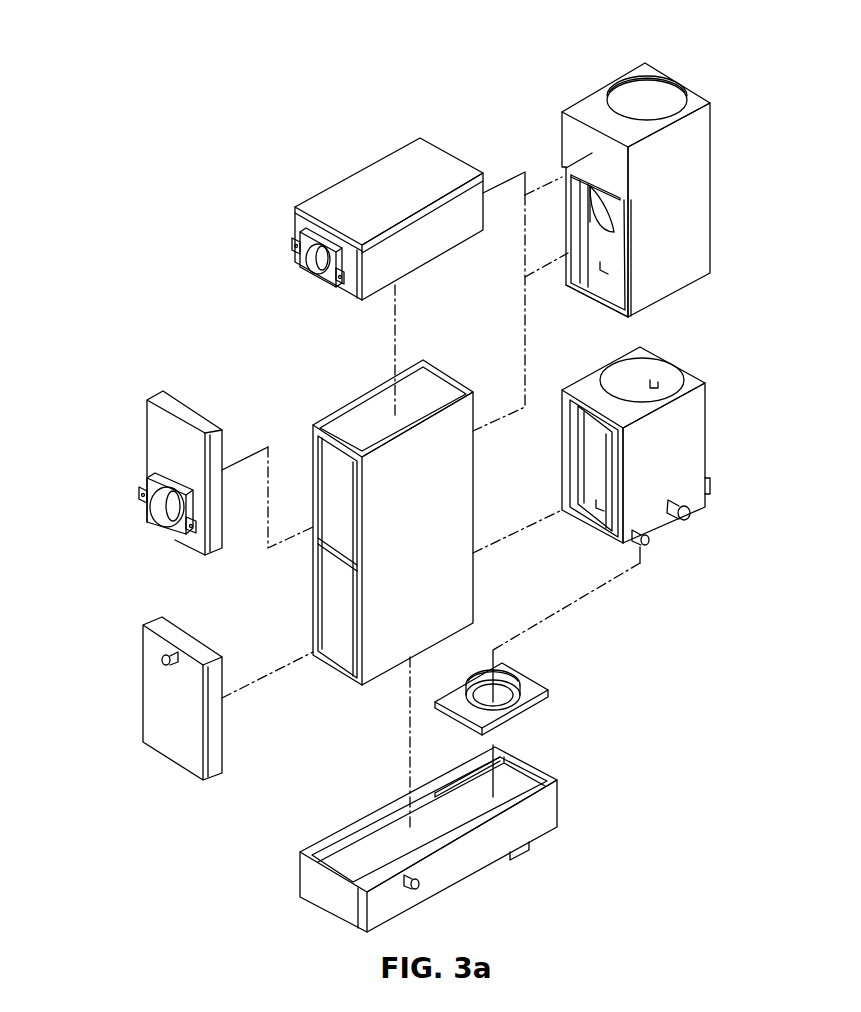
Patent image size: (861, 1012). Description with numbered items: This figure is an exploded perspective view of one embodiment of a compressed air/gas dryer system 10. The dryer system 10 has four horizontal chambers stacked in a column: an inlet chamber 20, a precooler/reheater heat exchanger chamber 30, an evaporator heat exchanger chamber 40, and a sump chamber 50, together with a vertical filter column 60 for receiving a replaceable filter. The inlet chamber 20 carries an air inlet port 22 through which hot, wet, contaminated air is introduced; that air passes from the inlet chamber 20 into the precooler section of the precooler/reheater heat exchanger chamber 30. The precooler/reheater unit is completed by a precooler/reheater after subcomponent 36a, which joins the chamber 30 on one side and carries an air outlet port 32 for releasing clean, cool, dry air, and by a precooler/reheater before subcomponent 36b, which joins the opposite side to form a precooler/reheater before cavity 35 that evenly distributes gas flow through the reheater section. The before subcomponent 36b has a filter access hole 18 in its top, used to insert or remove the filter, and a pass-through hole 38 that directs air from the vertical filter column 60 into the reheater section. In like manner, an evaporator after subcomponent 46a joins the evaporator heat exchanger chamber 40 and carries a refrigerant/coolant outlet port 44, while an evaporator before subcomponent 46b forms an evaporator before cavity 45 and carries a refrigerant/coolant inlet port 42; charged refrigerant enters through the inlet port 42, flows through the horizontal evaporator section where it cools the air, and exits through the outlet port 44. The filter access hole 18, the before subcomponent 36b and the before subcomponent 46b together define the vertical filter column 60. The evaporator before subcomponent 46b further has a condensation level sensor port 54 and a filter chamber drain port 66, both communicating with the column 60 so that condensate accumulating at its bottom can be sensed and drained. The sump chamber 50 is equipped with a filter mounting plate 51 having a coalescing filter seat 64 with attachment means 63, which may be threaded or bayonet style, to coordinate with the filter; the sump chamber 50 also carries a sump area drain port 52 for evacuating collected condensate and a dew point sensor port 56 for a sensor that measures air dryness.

The dryer system 10 is at (242, 163).
The filter access hole 18 is at (652, 78).
The inlet chamber 20 is at (377, 160).
The air inlet port 22 is at (300, 268).
The precooler/reheater heat exchanger chamber 30 is at (332, 455).
The air outlet port 32 is at (165, 514).
The precooler/reheater before cavity 35 is at (620, 283).
The precooler/reheater after subcomponent 36a is at (147, 448).
The precooler/reheater before subcomponent 36b is at (712, 198).
The pass-through hole 38 is at (592, 205).
The evaporator heat exchanger chamber 40 is at (330, 582).
The refrigerant/coolant inlet port 42 is at (648, 543).
The refrigerant/coolant outlet port 44 is at (163, 657).
The evaporator before cavity 45 is at (595, 500).
The evaporator after subcomponent 46a is at (143, 700).
The evaporator before subcomponent 46b is at (707, 415).
The sump chamber 50 is at (557, 808).
The filter mounting plate 51 is at (522, 714).
The sump area drain port 52 is at (527, 852).
The condensation level sensor port 54 is at (690, 512).
The dew point sensor port 56 is at (420, 888).
The vertical filter column 60 is at (655, 392).
The attachment means 63 is at (520, 684).
The coalescing filter seat 64 is at (503, 678).
The filter chamber drain port 66 is at (710, 484).